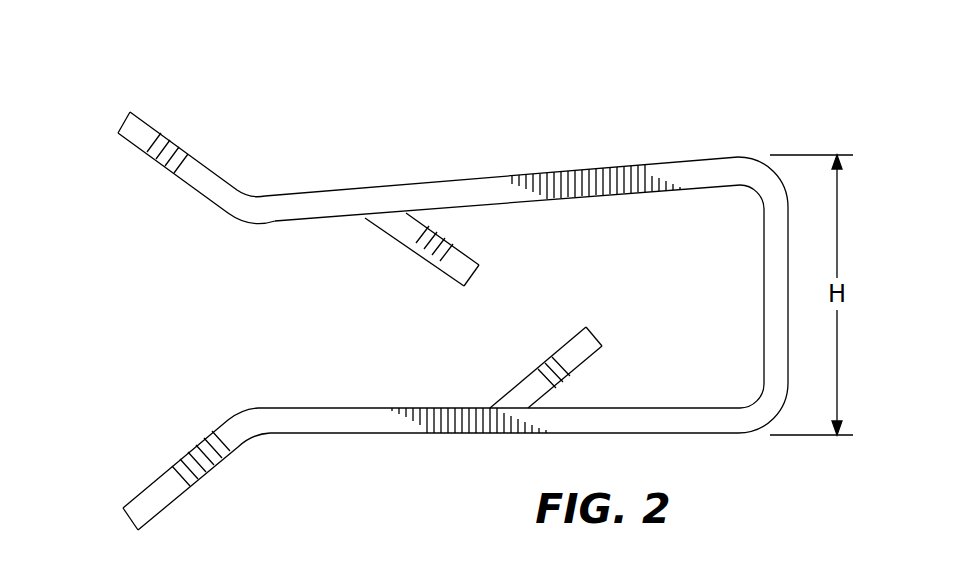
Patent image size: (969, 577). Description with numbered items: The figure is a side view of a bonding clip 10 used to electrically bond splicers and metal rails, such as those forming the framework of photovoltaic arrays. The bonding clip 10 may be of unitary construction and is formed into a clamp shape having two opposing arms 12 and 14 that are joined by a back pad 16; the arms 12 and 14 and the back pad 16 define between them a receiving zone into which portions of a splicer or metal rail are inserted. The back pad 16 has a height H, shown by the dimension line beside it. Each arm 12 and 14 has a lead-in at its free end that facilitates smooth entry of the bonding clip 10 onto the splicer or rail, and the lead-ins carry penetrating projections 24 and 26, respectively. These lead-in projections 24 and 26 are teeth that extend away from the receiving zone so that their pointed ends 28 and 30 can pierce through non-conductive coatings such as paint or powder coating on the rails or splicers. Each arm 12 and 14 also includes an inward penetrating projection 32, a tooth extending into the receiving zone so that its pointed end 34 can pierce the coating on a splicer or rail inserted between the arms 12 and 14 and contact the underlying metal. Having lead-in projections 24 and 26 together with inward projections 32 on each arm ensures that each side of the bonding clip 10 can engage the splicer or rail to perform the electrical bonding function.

The bonding clip 10 is at (713, 83).
The arm 12 is at (547, 173).
The arm 14 is at (416, 434).
The back pad 16 is at (763, 273).
The penetrating projection 24 is at (150, 158).
The penetrating projection 26 is at (167, 472).
The pointed end 28 is at (125, 117).
The pointed end 30 is at (130, 521).
The inward penetrating projection 32 is at (420, 256).
The pointed end 34 is at (476, 274).